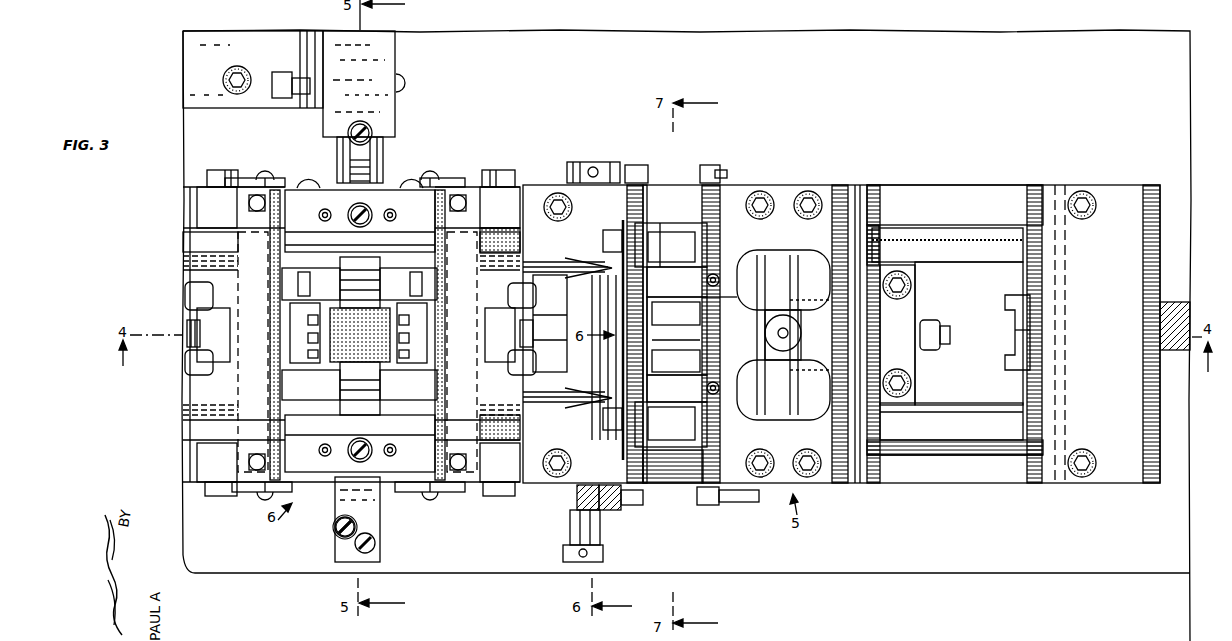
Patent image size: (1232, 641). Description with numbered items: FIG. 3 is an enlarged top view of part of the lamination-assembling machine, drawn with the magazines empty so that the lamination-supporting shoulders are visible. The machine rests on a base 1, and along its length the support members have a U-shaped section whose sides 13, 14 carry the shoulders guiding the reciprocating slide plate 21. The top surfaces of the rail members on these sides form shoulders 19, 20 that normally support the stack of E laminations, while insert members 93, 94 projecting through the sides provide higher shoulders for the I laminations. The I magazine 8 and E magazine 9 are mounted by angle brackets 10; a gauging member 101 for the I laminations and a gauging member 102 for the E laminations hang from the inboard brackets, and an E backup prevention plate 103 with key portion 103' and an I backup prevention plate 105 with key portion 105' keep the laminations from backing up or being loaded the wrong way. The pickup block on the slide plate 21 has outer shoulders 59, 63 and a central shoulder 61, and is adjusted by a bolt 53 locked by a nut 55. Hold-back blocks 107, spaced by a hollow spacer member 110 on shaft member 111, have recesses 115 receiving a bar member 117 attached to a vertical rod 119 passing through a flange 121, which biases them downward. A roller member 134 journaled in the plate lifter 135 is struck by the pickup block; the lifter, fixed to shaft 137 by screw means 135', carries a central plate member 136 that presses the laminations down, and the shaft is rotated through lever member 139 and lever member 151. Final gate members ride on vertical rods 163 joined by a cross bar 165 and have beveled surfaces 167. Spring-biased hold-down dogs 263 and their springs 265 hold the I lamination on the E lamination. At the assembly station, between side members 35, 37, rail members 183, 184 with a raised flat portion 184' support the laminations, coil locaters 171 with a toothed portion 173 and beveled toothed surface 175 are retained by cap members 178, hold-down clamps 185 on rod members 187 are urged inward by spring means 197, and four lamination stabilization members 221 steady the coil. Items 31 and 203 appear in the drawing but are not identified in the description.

The base 1 is at (1090, 533).
The I magazine 8 is at (651, 228).
The E magazine 9 is at (896, 228).
The angle bracket 10 is at (818, 440).
The side 13 is at (953, 483).
The side 14 is at (948, 190).
The shoulder 19 is at (955, 432).
The shoulder 20 is at (947, 245).
The slide plate 21 is at (230, 391).
The support 31 is at (1178, 352).
The side member 35 is at (225, 470).
The side member 37 is at (227, 215).
The bolt 53 is at (945, 332).
The nut 55 is at (935, 355).
The outer shoulder 59 is at (680, 395).
The central shoulder 61 is at (677, 340).
The outer shoulder 63 is at (694, 295).
The insert member 93 is at (683, 452).
The insert member 94 is at (682, 228).
The gauging member 101 is at (677, 336).
The gauging member 102 is at (897, 335).
The E backup prevention plate 103 is at (1009, 324).
The key portion 103' is at (1000, 341).
The I backup prevention plate 105 is at (725, 309).
The key portion 105' is at (676, 361).
The hold-back block 107 is at (758, 252).
The hollow spacer member 110 is at (721, 334).
The shaft member 111 is at (737, 170).
The recess 115 is at (803, 252).
The bar member 117 is at (792, 355).
The vertical rod 119 is at (772, 342).
The flange 121 is at (740, 346).
The roller member 134 is at (187, 327).
The plate lifter 135 is at (550, 323).
The screw means 135' is at (351, 336).
The central plate member 136 is at (228, 338).
The shaft 137 is at (601, 162).
The lever member 139 is at (616, 510).
The lever member 151 is at (572, 540).
The vertical rod 163 is at (257, 180).
The cross bar 165 is at (246, 233).
The beveled surface 167 is at (359, 335).
The coil locater 171 is at (288, 330).
The toothed portion 173 is at (380, 312).
The beveled toothed surface 175 is at (388, 388).
The cap member 178 is at (292, 178).
The rail member 183 is at (360, 443).
The rail member 184 is at (360, 221).
The central raised flat portion 184' is at (360, 240).
The hold-down clamp 185 is at (387, 188).
The rod member 187 is at (320, 455).
The spring means 197 is at (378, 528).
The knob 203 is at (412, 77).
The lamination stabilization member 221 is at (412, 268).
The lamination hold-down dog 263 is at (502, 334).
The spring 265 is at (548, 260).